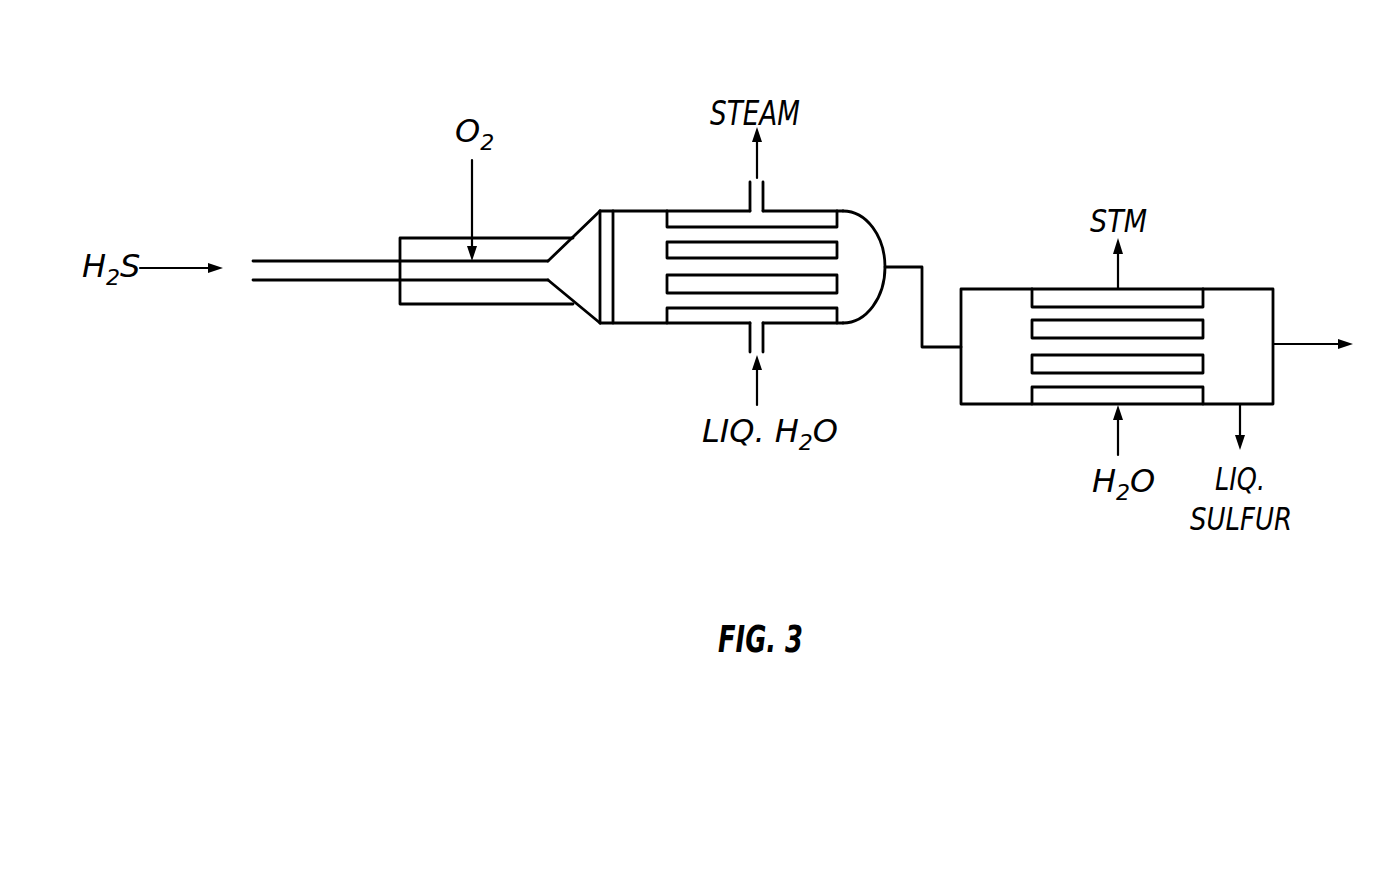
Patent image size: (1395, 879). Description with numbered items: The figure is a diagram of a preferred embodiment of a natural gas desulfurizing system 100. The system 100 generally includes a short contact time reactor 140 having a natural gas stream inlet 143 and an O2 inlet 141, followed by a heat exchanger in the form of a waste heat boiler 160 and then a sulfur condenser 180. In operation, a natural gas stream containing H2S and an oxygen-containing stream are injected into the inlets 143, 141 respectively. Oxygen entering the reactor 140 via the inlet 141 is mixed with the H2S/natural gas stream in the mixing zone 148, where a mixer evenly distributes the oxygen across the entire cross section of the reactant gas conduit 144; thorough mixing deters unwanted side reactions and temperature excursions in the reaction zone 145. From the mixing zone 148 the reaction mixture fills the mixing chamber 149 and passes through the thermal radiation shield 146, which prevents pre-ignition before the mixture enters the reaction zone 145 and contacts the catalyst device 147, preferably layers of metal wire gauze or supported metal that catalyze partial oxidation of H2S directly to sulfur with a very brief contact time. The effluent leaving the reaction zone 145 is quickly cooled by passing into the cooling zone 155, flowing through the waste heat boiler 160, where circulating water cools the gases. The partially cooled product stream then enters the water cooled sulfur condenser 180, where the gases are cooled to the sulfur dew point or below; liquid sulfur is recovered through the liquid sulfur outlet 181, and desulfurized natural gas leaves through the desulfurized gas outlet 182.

The natural gas desulfurizing system 100 is at (443, 445).
The short contact time reactor 140 is at (603, 210).
The O2 inlet 141 is at (472, 258).
The natural gas stream inlet 143 is at (402, 268).
The reactant gas conduit 144 is at (482, 268).
The reaction zone 145 is at (628, 210).
The thermal radiation shield 146 is at (600, 312).
The catalyst device 147 is at (613, 250).
The mixing zone 148 is at (600, 350).
The mixing chamber 149 is at (590, 297).
The cooling zone 155 is at (1270, 100).
The waste heat boiler 160 is at (813, 210).
The sulfur condenser 180 is at (1237, 288).
The liquid sulfur outlet 181 is at (1243, 407).
The desulfurized gas outlet 182 is at (1275, 343).